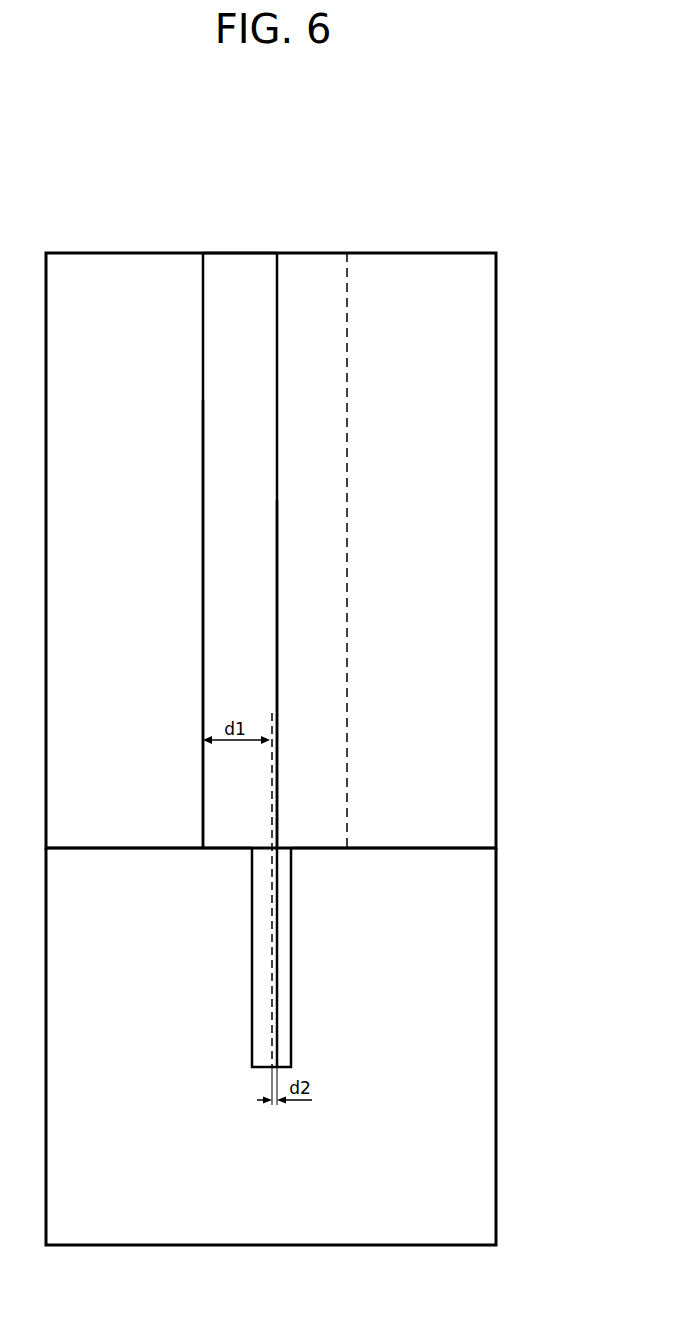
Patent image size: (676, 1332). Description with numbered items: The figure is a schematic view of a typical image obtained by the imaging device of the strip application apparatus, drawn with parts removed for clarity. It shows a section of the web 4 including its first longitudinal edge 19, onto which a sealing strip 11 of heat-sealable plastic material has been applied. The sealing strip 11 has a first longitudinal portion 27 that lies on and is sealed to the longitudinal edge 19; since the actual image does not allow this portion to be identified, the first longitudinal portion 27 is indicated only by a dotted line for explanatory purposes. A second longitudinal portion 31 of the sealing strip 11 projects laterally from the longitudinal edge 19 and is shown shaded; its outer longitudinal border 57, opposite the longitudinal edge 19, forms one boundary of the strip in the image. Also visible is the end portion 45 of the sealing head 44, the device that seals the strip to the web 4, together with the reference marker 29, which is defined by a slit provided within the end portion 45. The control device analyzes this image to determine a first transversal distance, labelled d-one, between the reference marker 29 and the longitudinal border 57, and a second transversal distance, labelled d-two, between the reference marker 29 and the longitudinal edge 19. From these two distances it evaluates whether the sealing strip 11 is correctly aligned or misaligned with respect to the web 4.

The web 4 is at (455, 356).
The sealing strip 11 is at (246, 246).
The first longitudinal edge 19 is at (290, 616).
The first longitudinal portion 27 is at (305, 292).
The reference marker 29 is at (283, 968).
The second longitudinal portion 31 is at (228, 348).
The sealing head 44 is at (518, 1045).
The end portion 45 is at (458, 922).
The longitudinal border 57 is at (203, 549).